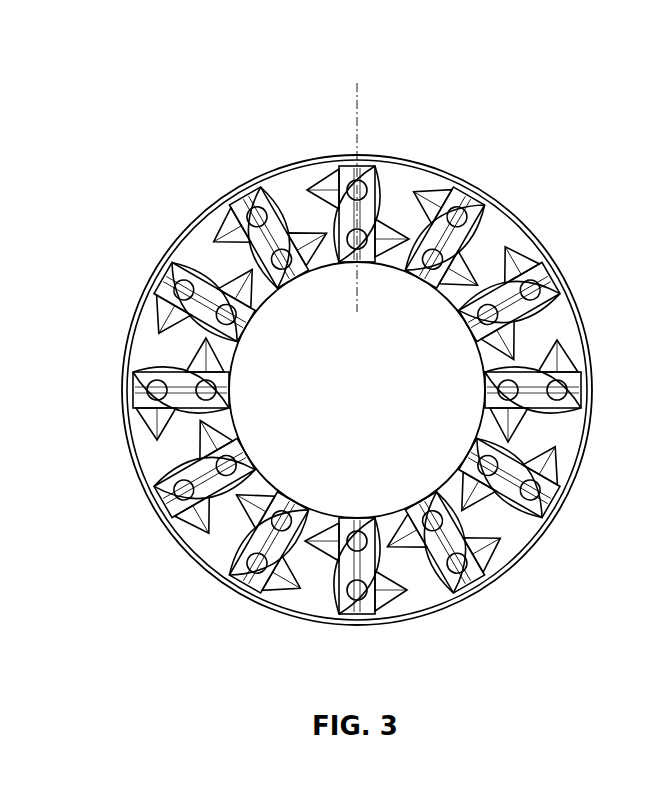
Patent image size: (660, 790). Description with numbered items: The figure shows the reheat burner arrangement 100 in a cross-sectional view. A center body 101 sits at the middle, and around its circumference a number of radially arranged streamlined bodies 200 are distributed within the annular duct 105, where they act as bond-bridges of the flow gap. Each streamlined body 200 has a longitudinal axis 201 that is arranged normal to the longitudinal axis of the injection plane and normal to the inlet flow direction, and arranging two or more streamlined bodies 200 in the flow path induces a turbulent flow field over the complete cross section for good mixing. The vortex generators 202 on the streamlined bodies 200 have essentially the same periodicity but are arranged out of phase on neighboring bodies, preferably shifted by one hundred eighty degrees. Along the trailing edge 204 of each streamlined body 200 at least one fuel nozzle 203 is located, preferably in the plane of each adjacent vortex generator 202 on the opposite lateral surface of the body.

The reheat burner arrangement 100 is at (297, 152).
The center body 101 is at (377, 402).
The annular duct 105 is at (407, 217).
The streamlined body 200 is at (548, 293).
The longitudinal axis 201 is at (359, 128).
The vortex generator 202 is at (523, 265).
The fuel nozzle 203 is at (229, 165).
The trailing edge 204 is at (212, 220).